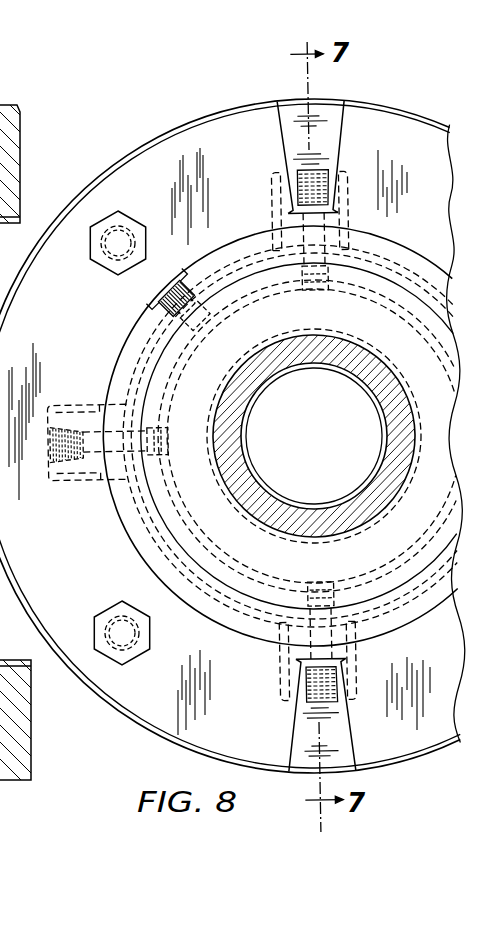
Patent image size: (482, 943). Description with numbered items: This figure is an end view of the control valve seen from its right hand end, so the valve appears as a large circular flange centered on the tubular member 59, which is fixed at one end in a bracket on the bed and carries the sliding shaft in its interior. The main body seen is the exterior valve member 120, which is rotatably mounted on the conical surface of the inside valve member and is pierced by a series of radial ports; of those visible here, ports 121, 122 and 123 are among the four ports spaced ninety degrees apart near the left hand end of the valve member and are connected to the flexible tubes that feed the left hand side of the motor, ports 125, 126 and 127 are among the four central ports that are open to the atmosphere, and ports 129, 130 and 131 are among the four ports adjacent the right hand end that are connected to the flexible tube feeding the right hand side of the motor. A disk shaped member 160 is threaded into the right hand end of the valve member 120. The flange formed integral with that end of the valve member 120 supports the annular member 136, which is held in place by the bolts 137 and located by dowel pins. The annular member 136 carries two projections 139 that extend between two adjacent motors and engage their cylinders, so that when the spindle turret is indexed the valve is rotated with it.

The tubular member 59 is at (228, 453).
The exterior valve member 120 is at (366, 655).
The radial port 121 is at (323, 292).
The radial port 122 is at (166, 424).
The radial port 123 is at (330, 577).
The radial port 125 is at (295, 284).
The radial port 126 is at (160, 455).
The radial port 127 is at (333, 590).
The radial port 129 is at (322, 279).
The radial port 130 is at (161, 474).
The radial port 131 is at (340, 603).
The annular member 136 is at (220, 137).
The bolt 137 is at (136, 198).
The projection 139 is at (330, 117).
The disk shaped member 160 is at (160, 508).